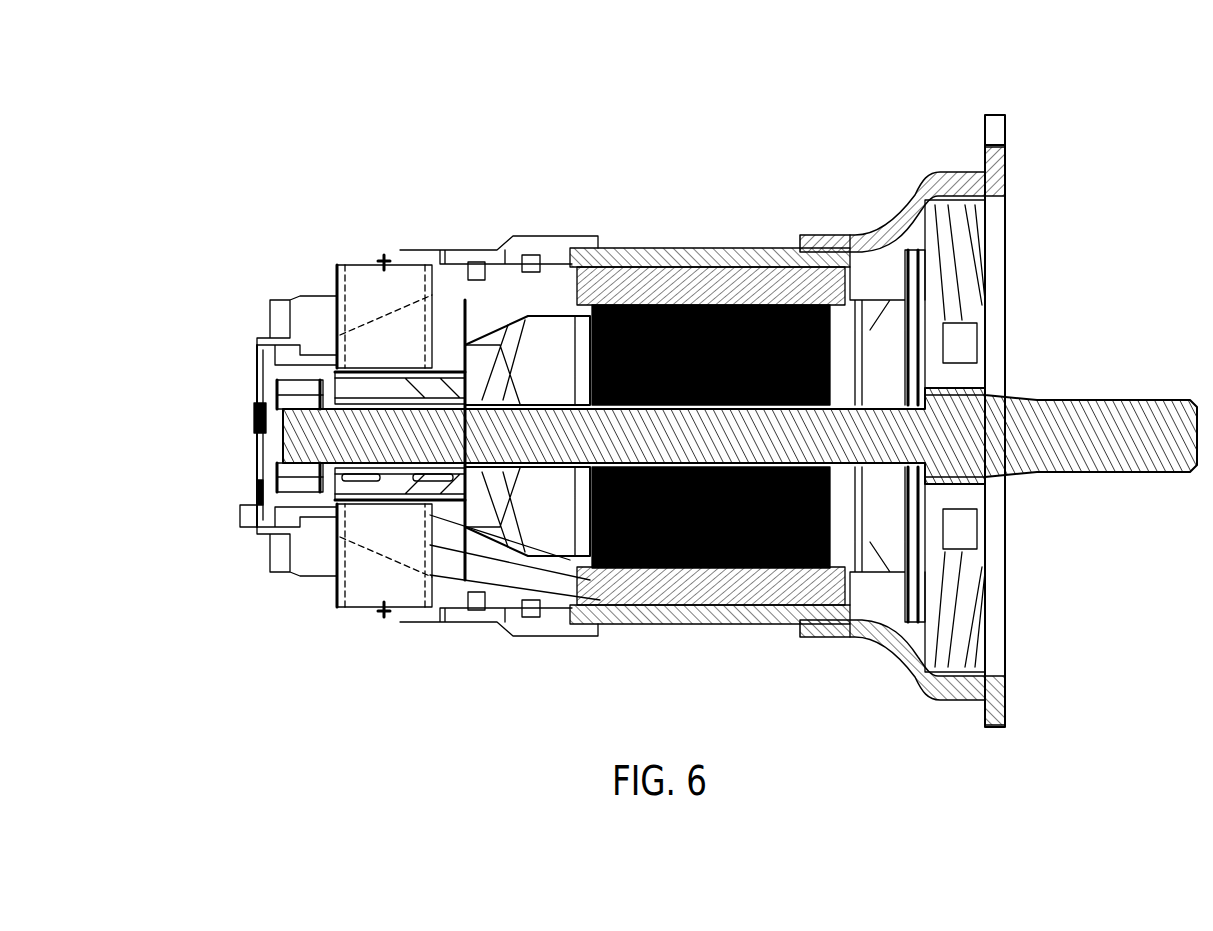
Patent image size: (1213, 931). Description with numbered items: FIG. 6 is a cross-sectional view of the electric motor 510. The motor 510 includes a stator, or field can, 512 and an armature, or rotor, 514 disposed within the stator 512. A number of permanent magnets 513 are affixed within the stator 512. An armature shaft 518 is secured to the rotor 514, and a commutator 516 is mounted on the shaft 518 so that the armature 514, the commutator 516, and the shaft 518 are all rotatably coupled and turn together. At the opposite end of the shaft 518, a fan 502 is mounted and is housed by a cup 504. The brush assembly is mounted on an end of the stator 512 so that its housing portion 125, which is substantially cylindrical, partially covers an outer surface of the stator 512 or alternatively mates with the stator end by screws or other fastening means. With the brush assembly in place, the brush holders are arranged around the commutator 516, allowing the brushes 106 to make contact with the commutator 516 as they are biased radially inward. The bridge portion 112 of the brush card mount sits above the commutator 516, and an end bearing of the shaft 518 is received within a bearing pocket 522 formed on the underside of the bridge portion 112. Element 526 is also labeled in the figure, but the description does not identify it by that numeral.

The motor 510 is at (810, 103).
The cup 504 is at (948, 174).
The fan 502 is at (984, 267).
The brush 106 is at (378, 318).
The commutator 516 is at (445, 388).
The armature shaft 518 is at (497, 628).
The housing portion 125 is at (535, 243).
The permanent magnets 513 is at (625, 281).
The stator 512 is at (695, 248).
The armature 514 is at (745, 297).
The retaining collar 526 is at (290, 382).
The bridge portion 112 is at (257, 460).
The bearing pocket 522 is at (250, 507).